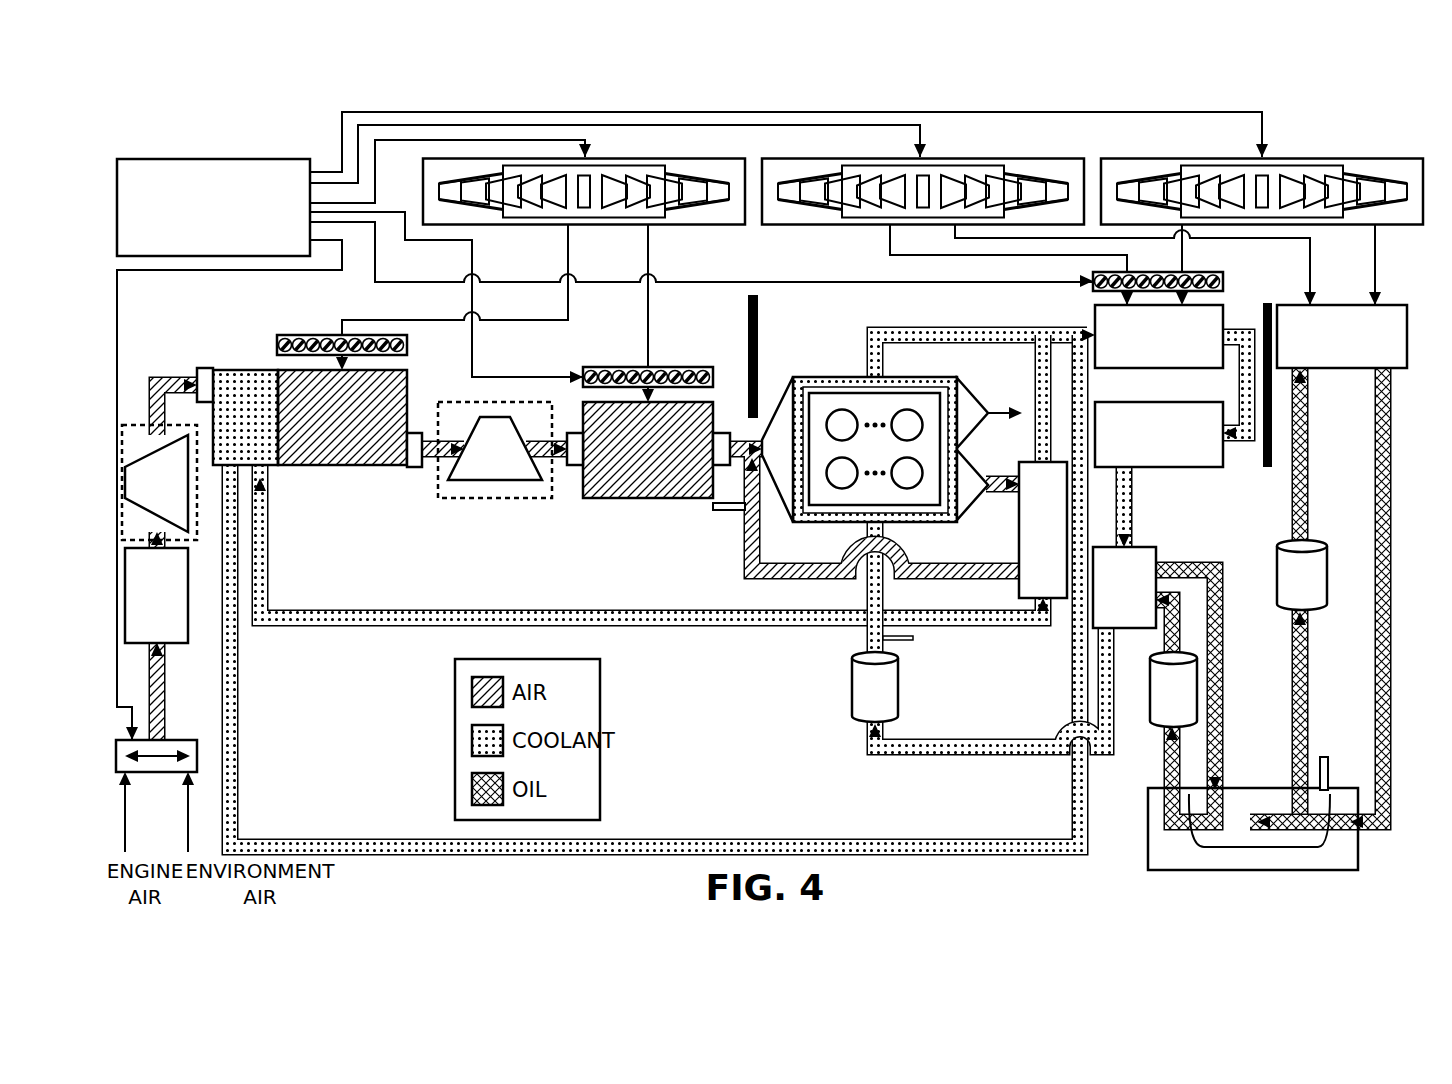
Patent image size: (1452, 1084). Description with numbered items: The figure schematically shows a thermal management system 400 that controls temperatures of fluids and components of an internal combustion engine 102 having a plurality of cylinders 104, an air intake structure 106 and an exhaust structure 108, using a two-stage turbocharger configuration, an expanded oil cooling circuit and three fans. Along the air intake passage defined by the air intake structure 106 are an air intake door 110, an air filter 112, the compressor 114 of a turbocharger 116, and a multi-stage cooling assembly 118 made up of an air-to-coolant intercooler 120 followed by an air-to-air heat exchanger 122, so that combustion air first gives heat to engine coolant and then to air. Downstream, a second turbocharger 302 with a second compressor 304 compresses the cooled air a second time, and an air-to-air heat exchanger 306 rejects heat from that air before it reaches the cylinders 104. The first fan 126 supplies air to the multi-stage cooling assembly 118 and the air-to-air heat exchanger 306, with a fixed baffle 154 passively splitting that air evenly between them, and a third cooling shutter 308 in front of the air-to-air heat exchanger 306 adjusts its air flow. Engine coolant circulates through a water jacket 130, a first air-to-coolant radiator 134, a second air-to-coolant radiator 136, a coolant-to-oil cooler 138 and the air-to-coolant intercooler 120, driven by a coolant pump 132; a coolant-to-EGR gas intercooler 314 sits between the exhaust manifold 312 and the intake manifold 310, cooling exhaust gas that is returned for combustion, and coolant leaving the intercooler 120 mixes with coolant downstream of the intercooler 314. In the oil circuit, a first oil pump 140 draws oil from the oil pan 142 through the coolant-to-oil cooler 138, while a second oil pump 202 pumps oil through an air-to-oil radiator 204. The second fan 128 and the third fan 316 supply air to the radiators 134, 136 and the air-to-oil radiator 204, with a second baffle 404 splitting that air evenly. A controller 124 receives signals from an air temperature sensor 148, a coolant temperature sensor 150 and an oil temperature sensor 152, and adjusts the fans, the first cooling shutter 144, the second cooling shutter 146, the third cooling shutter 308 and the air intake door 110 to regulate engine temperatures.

The thermal management system 400 is at (1348, 126).
The internal combustion engine 102 is at (896, 424).
The cylinders 104 is at (839, 462).
The air intake structure 106 is at (196, 340).
The exhaust structure 108 is at (1002, 390).
The air intake door 110 is at (170, 740).
The air filter 112 is at (156, 595).
The compressor 114 is at (159, 482).
The turbocharger 116 is at (143, 422).
The multi-stage cooling assembly 118 is at (309, 457).
The air-to-coolant intercooler 120 is at (245, 417).
The air-to-air heat exchanger 122 is at (309, 417).
The controller 124 is at (692, 426).
The first fan 126 is at (681, 162).
The second fan 128 is at (1019, 162).
The water jacket 130 is at (903, 523).
The coolant pump 132 is at (875, 687).
The first air-to-coolant radiator 134 is at (1159, 336).
The second air-to-coolant radiator 136 is at (1159, 434).
The coolant-to-oil cooler 138 is at (1124, 587).
The first oil pump 140 is at (1173, 689).
The oil pan 142 is at (1253, 829).
The first cooling shutter 144 is at (293, 335).
The second cooling shutter 146 is at (1217, 272).
The air temperature sensor 148 is at (728, 510).
The coolant temperature sensor 150 is at (928, 640).
The oil temperature sensor 152 is at (1324, 757).
The fixed baffle 154 is at (760, 356).
The second oil pump 202 is at (1302, 575).
The air-to-oil radiator 204 is at (1342, 336).
The second turbocharger 302 is at (495, 464).
The second compressor 304 is at (495, 448).
The air-to-air heat exchanger 306 is at (648, 450).
The third cooling shutter 308 is at (680, 367).
The intake manifold 310 is at (745, 566).
The exhaust manifold 312 is at (992, 512).
The coolant-to-EGR gas intercooler 314 is at (1043, 530).
The third fan 316 is at (1155, 162).
The second baffle 404 is at (1268, 468).